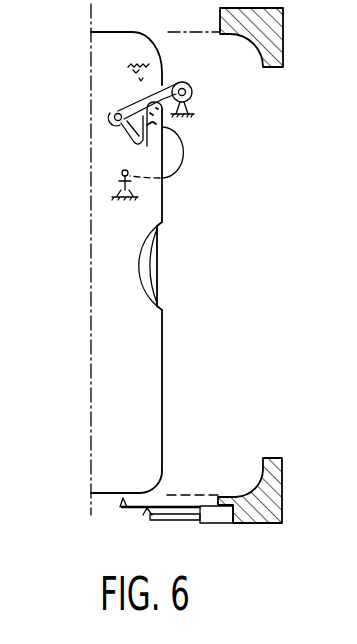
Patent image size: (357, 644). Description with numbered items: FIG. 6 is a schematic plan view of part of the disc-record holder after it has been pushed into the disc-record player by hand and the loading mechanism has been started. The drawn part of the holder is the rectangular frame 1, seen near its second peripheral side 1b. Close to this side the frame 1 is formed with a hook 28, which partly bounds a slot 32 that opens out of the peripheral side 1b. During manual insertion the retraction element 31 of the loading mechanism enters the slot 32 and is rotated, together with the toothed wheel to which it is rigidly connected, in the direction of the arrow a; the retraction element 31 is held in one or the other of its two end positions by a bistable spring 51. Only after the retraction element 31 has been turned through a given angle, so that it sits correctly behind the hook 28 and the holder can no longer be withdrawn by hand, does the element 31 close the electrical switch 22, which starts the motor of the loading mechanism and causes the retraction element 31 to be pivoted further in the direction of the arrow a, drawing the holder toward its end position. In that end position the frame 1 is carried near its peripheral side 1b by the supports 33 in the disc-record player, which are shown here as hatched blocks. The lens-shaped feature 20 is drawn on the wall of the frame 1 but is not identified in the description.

The frame 1 is at (148, 353).
The second peripheral side 1b is at (162, 416).
The lens 20 is at (152, 270).
The electrical switch 22 is at (213, 517).
The hook 28 is at (156, 133).
The retraction element 31 is at (165, 97).
The slot 32 is at (130, 133).
The supports 33 is at (272, 68).
The bistable spring 51 is at (177, 173).
The arrow a is at (120, 138).